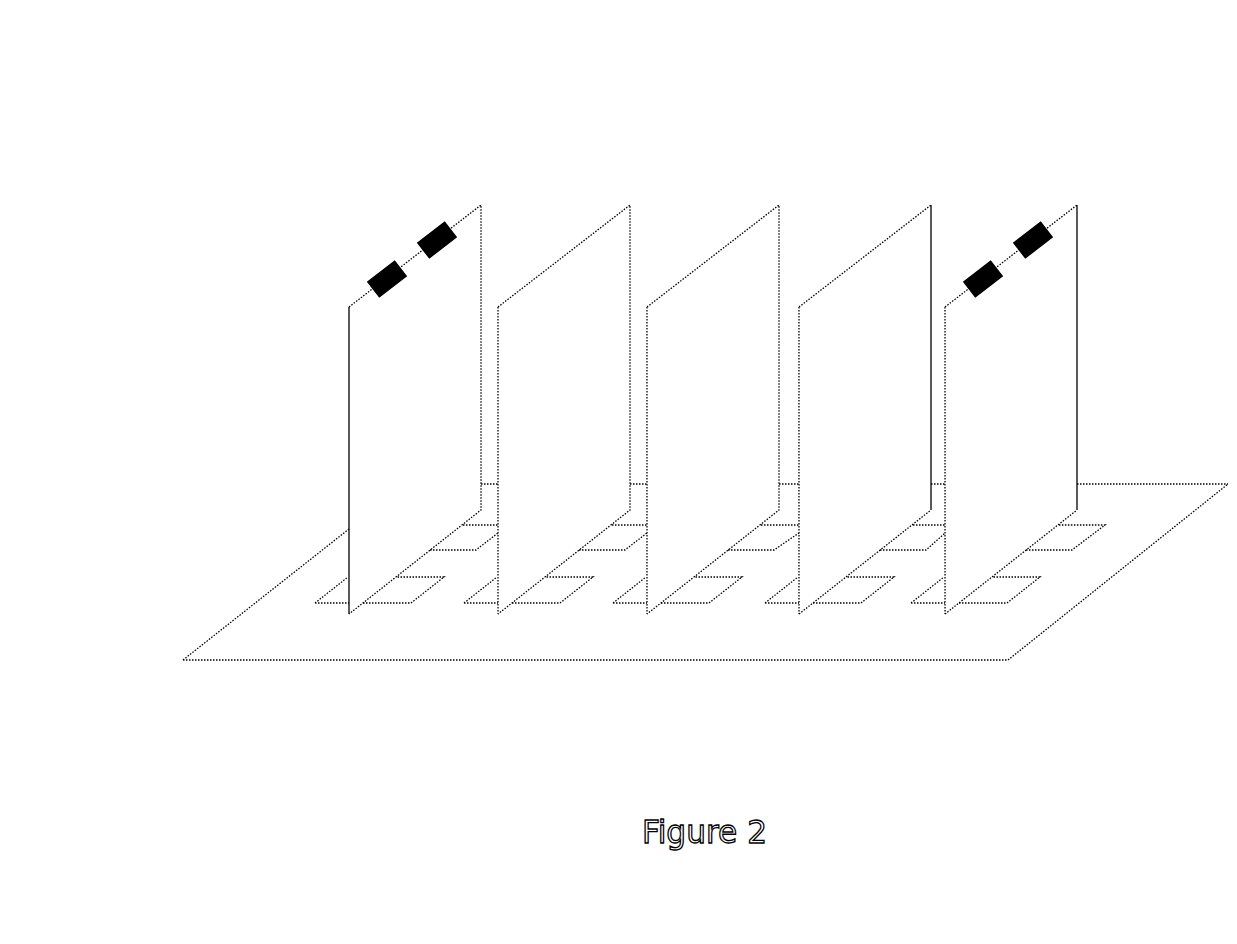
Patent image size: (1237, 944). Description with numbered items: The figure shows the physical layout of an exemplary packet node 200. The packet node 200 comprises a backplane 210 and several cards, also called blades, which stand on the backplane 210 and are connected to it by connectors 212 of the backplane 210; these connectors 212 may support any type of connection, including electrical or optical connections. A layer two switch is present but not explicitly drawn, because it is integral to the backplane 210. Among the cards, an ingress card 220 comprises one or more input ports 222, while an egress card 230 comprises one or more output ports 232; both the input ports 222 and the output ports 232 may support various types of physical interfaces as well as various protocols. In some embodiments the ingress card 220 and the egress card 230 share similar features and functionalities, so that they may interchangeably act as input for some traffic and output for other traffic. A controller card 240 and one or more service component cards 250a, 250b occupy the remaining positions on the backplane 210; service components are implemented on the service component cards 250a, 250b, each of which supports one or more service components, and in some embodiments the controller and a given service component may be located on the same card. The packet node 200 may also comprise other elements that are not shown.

The packet node 200 is at (1000, 101).
The backplane 210 is at (288, 592).
The connectors 212 is at (486, 603).
The ingress card 220 is at (348, 383).
The input ports 222 is at (430, 236).
The egress card 230 is at (1077, 347).
The output ports 232 is at (1020, 236).
The controller card 240 is at (548, 270).
The service component card 250a is at (693, 270).
The service component card 250b is at (872, 252).